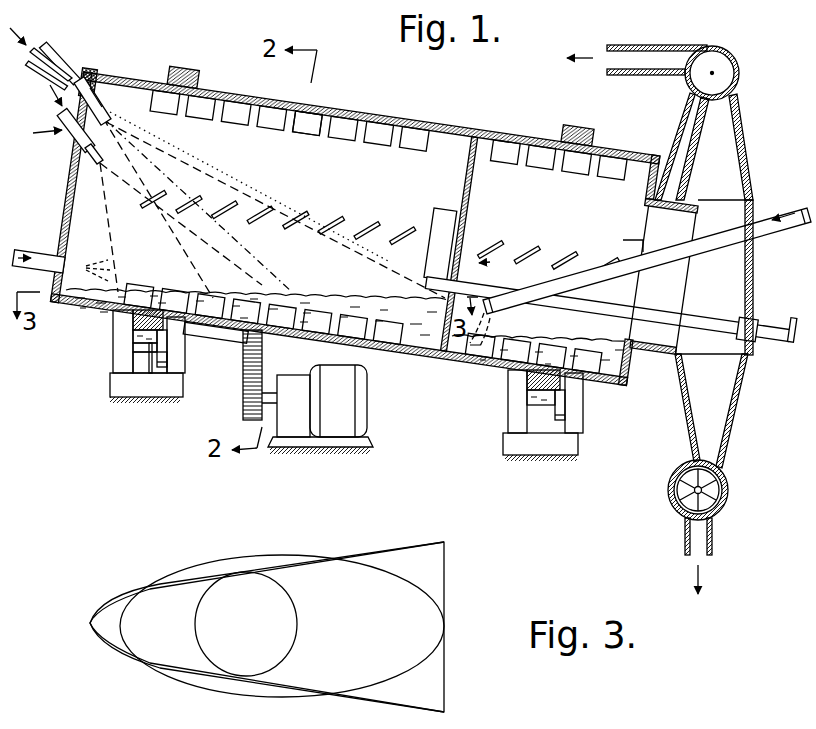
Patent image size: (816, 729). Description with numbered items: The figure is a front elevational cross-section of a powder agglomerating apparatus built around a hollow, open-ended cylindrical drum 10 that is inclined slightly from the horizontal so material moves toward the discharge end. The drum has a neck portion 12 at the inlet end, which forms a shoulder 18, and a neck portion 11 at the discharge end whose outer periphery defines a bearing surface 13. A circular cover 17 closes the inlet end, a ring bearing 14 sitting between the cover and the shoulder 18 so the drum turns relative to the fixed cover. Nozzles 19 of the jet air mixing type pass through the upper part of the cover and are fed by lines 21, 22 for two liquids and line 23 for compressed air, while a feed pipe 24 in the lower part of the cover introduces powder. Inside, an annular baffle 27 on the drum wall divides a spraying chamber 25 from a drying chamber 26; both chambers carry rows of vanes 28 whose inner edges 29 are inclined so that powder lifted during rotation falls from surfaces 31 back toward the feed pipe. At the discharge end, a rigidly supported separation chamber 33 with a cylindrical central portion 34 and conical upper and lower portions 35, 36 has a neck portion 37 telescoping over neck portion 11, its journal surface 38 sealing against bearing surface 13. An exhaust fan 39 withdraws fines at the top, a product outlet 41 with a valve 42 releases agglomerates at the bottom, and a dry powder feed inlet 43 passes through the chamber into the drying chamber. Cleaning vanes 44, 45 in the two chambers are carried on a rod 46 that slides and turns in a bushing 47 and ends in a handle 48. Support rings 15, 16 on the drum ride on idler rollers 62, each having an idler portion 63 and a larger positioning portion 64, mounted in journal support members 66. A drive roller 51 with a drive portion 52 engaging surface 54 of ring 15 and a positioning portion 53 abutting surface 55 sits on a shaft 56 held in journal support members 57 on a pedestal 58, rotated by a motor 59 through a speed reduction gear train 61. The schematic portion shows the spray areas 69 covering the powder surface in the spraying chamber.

In FIG. 1, the cylindrical drum 10 is at (444, 118).
In FIG. 1, the neck portion 11 is at (655, 351).
In FIG. 1, the neck portion 12 is at (100, 88).
In FIG. 1, the bearing surface 13 is at (640, 358).
In FIG. 1, the ring bearing 14 is at (93, 70).
In FIG. 1, the support ring 15 is at (185, 64).
In FIG. 1, the support ring 16 is at (577, 126).
In FIG. 1, the circular cover 17 is at (67, 187).
In FIG. 1, the shoulder 18 is at (83, 264).
In FIG. 1, the nozzles 19 is at (46, 104).
In FIG. 1, the line 21 is at (32, 70).
In FIG. 1, the line 22 is at (36, 48).
In FIG. 1, the line 23 is at (53, 44).
In FIG. 1, the feed pipe 24 is at (27, 249).
In FIG. 1, the spraying chamber 25 is at (264, 171).
In FIG. 1, the drying chamber 26 is at (563, 221).
In FIG. 1, the annular baffle 27 is at (437, 351).
In FIG. 1, the vanes 28 is at (393, 152).
In FIG. 1, the inner edges 29 is at (347, 131).
In FIG. 1, the surfaces 31 is at (331, 218).
In FIG. 1, the separation chamber 33 is at (687, 189).
In FIG. 1, the cylindrical central portion 34 is at (754, 254).
In FIG. 1, the upper portion 35 is at (735, 106).
In FIG. 1, the lower portion 36 is at (737, 410).
In FIG. 1, the neck portion 37 is at (667, 190).
In FIG. 1, the journal surface 38 is at (671, 205).
In FIG. 1, the exhaust fan 39 is at (728, 52).
In FIG. 1, the product outlet 41 is at (714, 535).
In FIG. 1, the valve 42 is at (729, 492).
In FIG. 1, the dry powder feed inlet 43 is at (761, 221).
In FIG. 1, the vane 44 is at (441, 211).
In FIG. 1, the vane 45 is at (623, 240).
In FIG. 1, the rod 46 is at (763, 340).
In FIG. 1, the bushing 47 is at (758, 319).
In FIG. 1, the handle 48 is at (797, 347).
In FIG. 1, the drive roller 51 is at (136, 361).
In FIG. 1, the drive portion 52 is at (132, 346).
In FIG. 1, the positioning portion 53 is at (167, 349).
In FIG. 1, the surface 54 is at (133, 334).
In FIG. 1, the surface 55 is at (150, 331).
In FIG. 1, the shaft 56 is at (230, 345).
In FIG. 1, the journal support members 57 is at (123, 319).
In FIG. 1, the pedestal 58 is at (131, 388).
In FIG. 1, the motor 59 is at (368, 405).
In FIG. 1, the speed reduction gear train 61 is at (268, 375).
In FIG. 1, the idler rollers 62 is at (537, 419).
In FIG. 1, the idler portion 63 is at (527, 401).
In FIG. 1, the positioning portion 64 is at (565, 398).
In FIG. 1, the journal support members 66 is at (508, 385).
In FIG. 3, the spray areas 69 is at (285, 570).